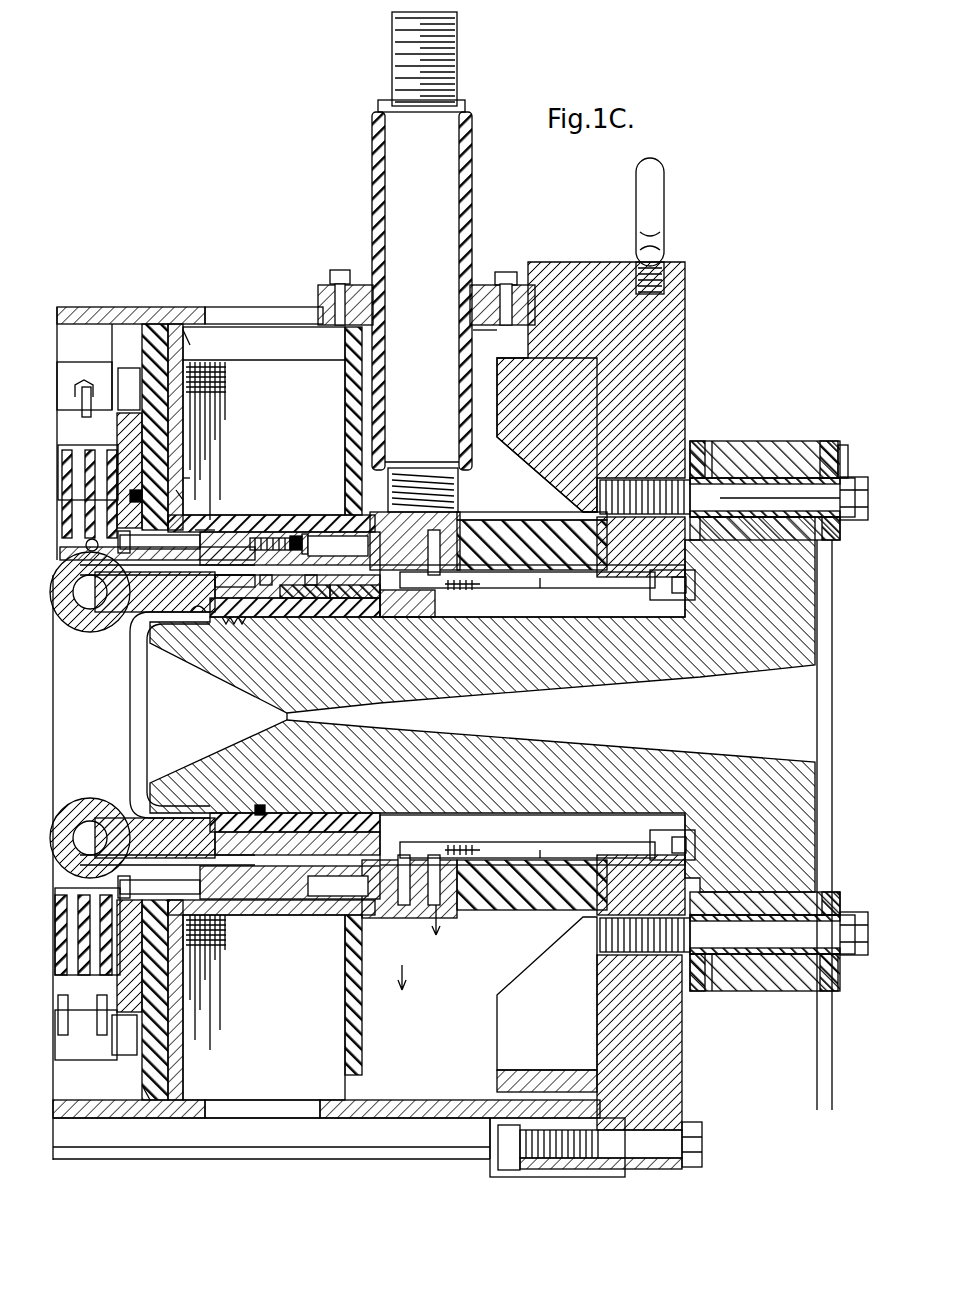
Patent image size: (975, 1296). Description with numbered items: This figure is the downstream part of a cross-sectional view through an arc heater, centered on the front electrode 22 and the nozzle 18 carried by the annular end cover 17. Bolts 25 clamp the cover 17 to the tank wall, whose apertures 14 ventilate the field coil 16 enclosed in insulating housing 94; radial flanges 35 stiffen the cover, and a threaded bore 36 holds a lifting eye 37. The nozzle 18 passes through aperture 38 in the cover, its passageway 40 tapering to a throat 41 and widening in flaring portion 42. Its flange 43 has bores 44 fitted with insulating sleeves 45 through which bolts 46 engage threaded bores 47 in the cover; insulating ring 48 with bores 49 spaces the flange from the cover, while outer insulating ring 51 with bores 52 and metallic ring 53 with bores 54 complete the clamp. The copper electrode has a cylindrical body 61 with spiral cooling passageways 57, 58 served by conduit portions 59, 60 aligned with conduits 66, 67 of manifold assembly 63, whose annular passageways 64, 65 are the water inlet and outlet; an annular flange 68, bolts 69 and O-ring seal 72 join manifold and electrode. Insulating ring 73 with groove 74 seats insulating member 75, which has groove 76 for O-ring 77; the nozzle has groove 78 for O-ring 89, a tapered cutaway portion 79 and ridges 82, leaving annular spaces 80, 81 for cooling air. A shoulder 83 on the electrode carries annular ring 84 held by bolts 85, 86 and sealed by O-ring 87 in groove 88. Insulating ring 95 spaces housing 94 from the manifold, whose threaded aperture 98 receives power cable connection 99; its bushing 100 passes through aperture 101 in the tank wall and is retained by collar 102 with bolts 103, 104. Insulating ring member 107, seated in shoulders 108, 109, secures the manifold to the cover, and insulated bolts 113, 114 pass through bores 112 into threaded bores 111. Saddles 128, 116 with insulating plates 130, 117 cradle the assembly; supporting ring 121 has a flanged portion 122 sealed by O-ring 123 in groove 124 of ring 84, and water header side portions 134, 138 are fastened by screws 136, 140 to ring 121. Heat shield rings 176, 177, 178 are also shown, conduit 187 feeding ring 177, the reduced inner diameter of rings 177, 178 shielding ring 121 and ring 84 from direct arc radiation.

The spaced apertures 14 is at (256, 316).
The field coil 16 is at (284, 372).
The annular end cover 17 is at (686, 352).
The nozzle 18 is at (812, 616).
The front electrode 22 is at (80, 818).
The bolts 25 is at (672, 1162).
The radially extending flanges 35 is at (540, 450).
The threaded bore 36 is at (664, 278).
The eye or ring 37 is at (664, 193).
The circular aperture 38 is at (648, 600).
The inner passageway portion 40 is at (138, 706).
The throat 41 is at (285, 716).
The flaring portion 42 is at (808, 712).
The flange portion 43 is at (774, 448).
The spaced bores 44 is at (772, 716).
The sleeve of insulating material 45 is at (778, 1002).
The bolt 46 is at (855, 490).
The threaded bore 47 is at (604, 490).
The annular insulating ring 48 is at (700, 448).
The bores 49 is at (732, 452).
The additional annular insulating ring 51 is at (826, 448).
The spaced bores 52 is at (836, 540).
The annular metallic ring 53 is at (843, 455).
The bores 54 is at (838, 525).
The spiral passageway 57 is at (84, 624).
The spiral passageway 58 is at (84, 868).
The conduit portion 59 is at (155, 592).
The exit conduit 60 is at (152, 858).
The cylindrical body portion 61 is at (262, 536).
The front electrode manifold assembly 63 is at (452, 520).
The annular passageway 64 is at (438, 948).
The annular passageway 65 is at (402, 905).
The conduits 66 is at (338, 545).
The conduit portion 67 is at (324, 872).
The annular flange 68 is at (296, 535).
The bolts 69 is at (314, 534).
The O-ring seal 72 is at (252, 546).
The annular ring 73 is at (407, 603).
The annular cutaway groove portion 74 is at (380, 618).
The ring-like member 75 is at (352, 618).
The annular groove 76 is at (292, 618).
The O-ring 77 is at (230, 715).
The annular groove 78 is at (266, 618).
The tapered cutaway annular portion 79 is at (314, 618).
The annular space 80 is at (196, 604).
The annular space 81 is at (214, 620).
The annular ridges 82 is at (236, 626).
The shoulder 83 is at (157, 548).
The annular ring 84 is at (184, 499).
The bolt 85 is at (90, 546).
The bolt 86 is at (138, 880).
The O-ring seal 87 is at (202, 528).
The annular groove 88 is at (164, 539).
The O-ring 89 is at (262, 806).
The housing 94 is at (188, 345).
The annular insulating ring 95 is at (345, 474).
The threaded aperture 98 is at (456, 492).
The power cable connection 99 is at (455, 478).
The electrical bushing 100 is at (374, 184).
The aperture 101 is at (483, 328).
The collar 102 is at (484, 290).
The bolt 103 is at (340, 270).
The bolt 104 is at (506, 272).
The ring member 107 is at (532, 523).
The shoulder 108 is at (532, 715).
The shoulder 109 is at (592, 540).
The bores 111 is at (495, 590).
The bores 112 is at (648, 604).
The bolt 113 is at (554, 590).
The bolt 114 is at (548, 848).
The saddle 116 is at (150, 1110).
The plate 117 is at (142, 1094).
The ring-like supporting member 121 is at (190, 450).
The flanged portion 122 is at (186, 476).
The O-ring 123 is at (150, 486).
The annular groove 124 is at (148, 498).
The saddle 128 is at (160, 322).
The plate 130 is at (118, 316).
The extended side portion 134 is at (118, 376).
The screw 136 is at (130, 368).
The extended side portion 138 is at (120, 1068).
The screw 140 is at (114, 1048).
The ring 176 is at (85, 481).
The ring 177 is at (83, 491).
The ring 178 is at (115, 481).
The conduit 187 is at (94, 378).